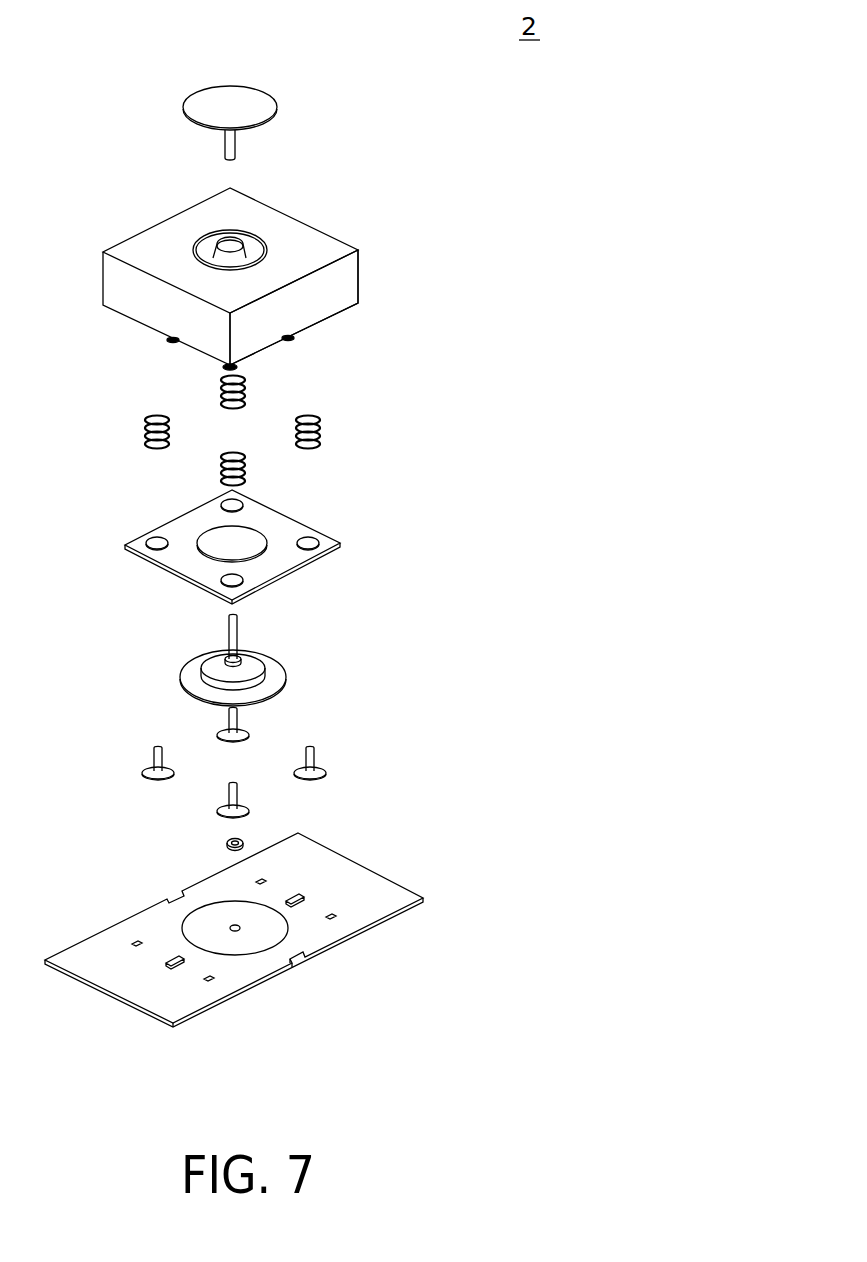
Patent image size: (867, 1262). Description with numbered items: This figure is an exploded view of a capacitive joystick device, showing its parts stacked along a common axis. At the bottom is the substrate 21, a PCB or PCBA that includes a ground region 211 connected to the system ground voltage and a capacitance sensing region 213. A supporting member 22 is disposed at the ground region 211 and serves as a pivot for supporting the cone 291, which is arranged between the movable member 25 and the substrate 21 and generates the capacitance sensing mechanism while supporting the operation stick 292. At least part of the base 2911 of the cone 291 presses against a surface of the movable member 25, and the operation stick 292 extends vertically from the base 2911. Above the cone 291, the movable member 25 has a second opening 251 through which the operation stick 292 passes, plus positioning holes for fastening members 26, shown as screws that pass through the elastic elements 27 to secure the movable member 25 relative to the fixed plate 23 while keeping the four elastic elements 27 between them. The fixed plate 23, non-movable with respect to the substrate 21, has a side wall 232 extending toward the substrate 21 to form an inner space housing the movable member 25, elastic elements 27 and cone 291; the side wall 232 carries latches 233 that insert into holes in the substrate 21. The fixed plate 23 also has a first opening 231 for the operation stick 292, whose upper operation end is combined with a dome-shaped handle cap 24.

The substrate 21 is at (269, 933).
The ground region 211 is at (235, 932).
The capacitance sensing region 213 is at (270, 937).
The supporting member 22 is at (226, 845).
The fixed plate 23 is at (287, 249).
The first opening 231 is at (217, 258).
The side wall 232 is at (347, 277).
The latches 233 is at (293, 340).
The handle cap 24 is at (254, 98).
The movable member 25 is at (258, 534).
The second opening 251 is at (221, 542).
The fastening members 26 is at (145, 773).
The elastic elements 27 is at (142, 430).
The cone 291 is at (239, 657).
The base 2911 is at (192, 668).
The operation stick 292 is at (238, 627).